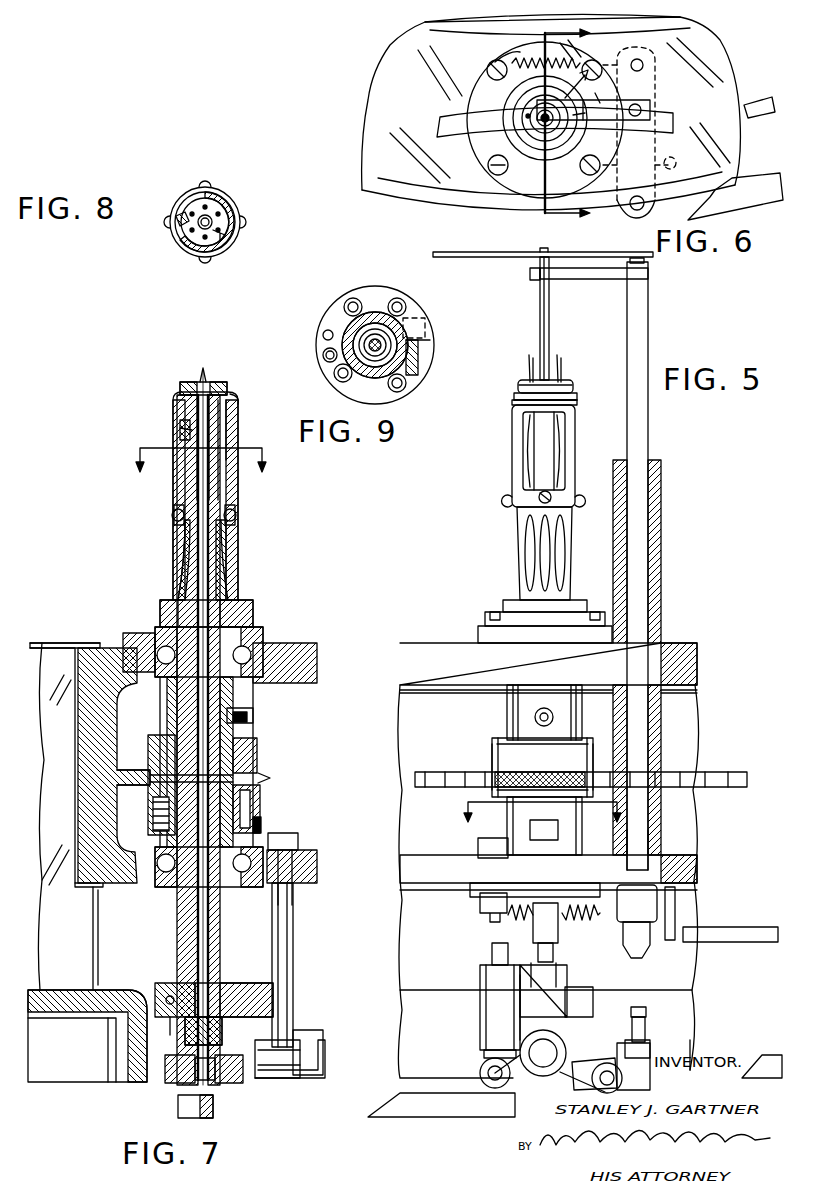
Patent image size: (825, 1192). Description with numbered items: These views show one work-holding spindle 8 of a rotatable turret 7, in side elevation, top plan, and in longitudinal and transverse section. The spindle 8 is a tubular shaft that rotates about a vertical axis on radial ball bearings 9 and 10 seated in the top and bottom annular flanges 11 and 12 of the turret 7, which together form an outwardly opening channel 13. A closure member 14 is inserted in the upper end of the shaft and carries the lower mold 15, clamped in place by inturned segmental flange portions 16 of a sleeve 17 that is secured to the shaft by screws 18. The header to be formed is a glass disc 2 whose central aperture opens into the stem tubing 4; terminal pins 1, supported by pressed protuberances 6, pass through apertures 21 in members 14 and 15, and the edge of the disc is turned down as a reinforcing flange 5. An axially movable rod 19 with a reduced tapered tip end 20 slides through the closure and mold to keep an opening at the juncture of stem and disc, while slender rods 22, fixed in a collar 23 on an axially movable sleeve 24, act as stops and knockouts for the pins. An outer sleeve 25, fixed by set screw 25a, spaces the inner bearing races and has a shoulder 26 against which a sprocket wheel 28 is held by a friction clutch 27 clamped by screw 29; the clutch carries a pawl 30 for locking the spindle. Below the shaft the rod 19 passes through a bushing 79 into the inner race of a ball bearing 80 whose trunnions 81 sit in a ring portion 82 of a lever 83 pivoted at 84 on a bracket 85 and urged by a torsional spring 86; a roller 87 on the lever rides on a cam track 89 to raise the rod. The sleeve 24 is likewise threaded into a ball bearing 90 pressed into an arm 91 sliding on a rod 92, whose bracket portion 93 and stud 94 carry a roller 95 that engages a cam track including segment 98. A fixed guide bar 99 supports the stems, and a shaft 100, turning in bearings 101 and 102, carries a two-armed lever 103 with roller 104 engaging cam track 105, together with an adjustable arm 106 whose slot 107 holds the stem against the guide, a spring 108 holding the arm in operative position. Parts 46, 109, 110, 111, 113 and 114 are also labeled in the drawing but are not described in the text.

In FIG. 5, the pins 1 is at (562, 372).
In FIG. 5, the glass wafer or disc 2 is at (570, 383).
In FIG. 6, the elongated tubing 4 is at (548, 118).
In FIG. 5, the elongated tubing 4 is at (550, 326).
In FIG. 5, the depending reinforcing flange 5 is at (518, 388).
In FIG. 5, the protuberances 6 is at (526, 378).
In FIG. 6, the turret 7 is at (368, 174).
In FIG. 7, the turret 7 is at (56, 635).
In FIG. 5, the turret 7 is at (698, 720).
In FIG. 6, the spindle 8 is at (512, 103).
In FIG. 8, the spindle 8 is at (236, 206).
In FIG. 9, the spindle 8 is at (378, 313).
In FIG. 7, the spindle 8 is at (235, 580).
In FIG. 5, the spindle 8 is at (530, 445).
In FIG. 7, the radial ball bearing 9 is at (252, 630).
In FIG. 5, the radial ball bearing 9 is at (541, 823).
In FIG. 7, the radial ball bearing 10 is at (158, 842).
In FIG. 6, the top annular flange 11 is at (405, 194).
In FIG. 7, the top annular flange 11 is at (314, 640).
In FIG. 5, the top annular flange 11 is at (446, 640).
In FIG. 7, the bottom annular flange 12 is at (312, 852).
In FIG. 5, the bottom annular flange 12 is at (400, 875).
In FIG. 7, the outwardly opening channel 13 is at (120, 728).
In FIG. 5, the outwardly opening channel 13 is at (402, 758).
In FIG. 7, the closure member 14 is at (240, 433).
In FIG. 6, the lower mold 15 is at (476, 109).
In FIG. 7, the lower mold 15 is at (211, 384).
In FIG. 5, the lower mold 15 is at (578, 396).
In FIG. 7, the inturned segmental flange portions 16 is at (234, 400).
In FIG. 8, the sleeve 17 is at (236, 228).
In FIG. 7, the sleeve 17 is at (236, 414).
In FIG. 5, the sleeve 17 is at (578, 405).
In FIG. 8, the screws 18 is at (242, 215).
In FIG. 5, the screws 18 is at (508, 499).
In FIG. 8, the axially movable rod 19 is at (210, 214).
In FIG. 9, the axially movable rod 19 is at (410, 308).
In FIG. 7, the axially movable rod 19 is at (225, 532).
In FIG. 7, the tip end 20 is at (203, 372).
In FIG. 5, the tip end 20 is at (514, 402).
In FIG. 6, the apertures 21 is at (527, 120).
In FIG. 7, the apertures 21 is at (182, 386).
In FIG. 8, the slender rods 22 is at (181, 240).
In FIG. 7, the slender rods 22 is at (182, 430).
In FIG. 8, the collar 23 is at (222, 247).
In FIG. 7, the collar 23 is at (178, 503).
In FIG. 9, the axially movable sleeve 24 is at (345, 325).
In FIG. 7, the axially movable sleeve 24 is at (185, 527).
In FIG. 5, the axially movable sleeve 24 is at (515, 928).
In FIG. 7, the outer sleeve 25 is at (160, 688).
In FIG. 5, the outer sleeve 25 is at (507, 702).
In FIG. 7, the set screw 25a is at (253, 710).
In FIG. 5, the set screw 25a is at (535, 718).
In FIG. 7, the shoulder 26 is at (254, 736).
In FIG. 5, the shoulder 26 is at (500, 740).
In FIG. 9, the friction clutch 27 is at (345, 312).
In FIG. 7, the friction clutch 27 is at (260, 806).
In FIG. 5, the friction clutch 27 is at (490, 830).
In FIG. 7, the sprocket wheel 28 is at (270, 778).
In FIG. 5, the sprocket wheel 28 is at (584, 770).
In FIG. 9, the screw 29 is at (420, 355).
In FIG. 9, the pawl 30 is at (323, 355).
In FIG. 7, the pawl 30 is at (262, 822).
In FIG. 5, the pawl 30 is at (540, 838).
In FIG. 7, the belt 46 is at (118, 785).
In FIG. 5, the belt 46 is at (416, 779).
In FIG. 7, the bushing 79 is at (188, 1030).
In FIG. 7, the radial ball bearing 80 is at (222, 1080).
In FIG. 7, the trunnions 81 is at (168, 1080).
In FIG. 7, the ring portion 82 is at (200, 1080).
In FIG. 5, the ring portion 82 is at (575, 1065).
In FIG. 5, the lever 83 is at (607, 1063).
In FIG. 5, the pivot 84 is at (625, 1043).
In FIG. 5, the bracket 85 is at (645, 1020).
In FIG. 5, the torsional spring 86 is at (648, 1044).
In FIG. 5, the roller 87 is at (480, 1073).
In FIG. 6, the segmental cam track 89 is at (768, 100).
In FIG. 7, the segmental cam track 89 is at (214, 1108).
In FIG. 5, the segmental cam track 89 is at (420, 1100).
In FIG. 7, the radial ball bearing 90 is at (172, 985).
In FIG. 7, the arm 91 is at (248, 982).
In FIG. 5, the arm 91 is at (495, 1008).
In FIG. 7, the rod 92 is at (290, 930).
In FIG. 5, the rod 92 is at (492, 950).
In FIG. 5, the bracket portion 93 is at (520, 1010).
In FIG. 5, the stud 94 is at (512, 1050).
In FIG. 7, the roller 95 is at (318, 1030).
In FIG. 5, the roller 95 is at (545, 1017).
In FIG. 7, the cam track segment 98 is at (268, 1080).
In FIG. 5, the cam track segment 98 is at (772, 1056).
In FIG. 6, the segmental guide bar 99 is at (438, 126).
In FIG. 5, the segmental guide bar 99 is at (510, 262).
In FIG. 6, the shaft 100 is at (636, 110).
In FIG. 5, the shaft 100 is at (649, 338).
In FIG. 5, the bearing 101 is at (660, 568).
In FIG. 5, the bearing 102 is at (648, 845).
In FIG. 6, the two-armed lever 103 is at (656, 68).
In FIG. 5, the two-armed lever 103 is at (660, 905).
In FIG. 6, the roller 104 is at (636, 213).
In FIG. 5, the roller 104 is at (648, 950).
In FIG. 6, the segmental cam track 105 is at (758, 176).
In FIG. 5, the segmental cam track 105 is at (752, 920).
In FIG. 6, the longitudinally adjustable arm 106 is at (592, 118).
In FIG. 5, the longitudinally adjustable arm 106 is at (622, 280).
In FIG. 6, the open slot 107 is at (542, 112).
In FIG. 5, the open slot 107 is at (535, 280).
In FIG. 6, the spring 108 is at (515, 55).
In FIG. 5, the spring 108 is at (580, 925).
In FIG. 7, the wall 109 is at (78, 700).
In FIG. 5, the wall 109 is at (402, 726).
In FIG. 7, the block 110 is at (75, 1005).
In FIG. 7, the block 111 is at (135, 1042).
In FIG. 5, the block 111 is at (690, 1030).
In FIG. 7, the wall 113 is at (93, 937).
In FIG. 7, the plate 114 is at (54, 640).